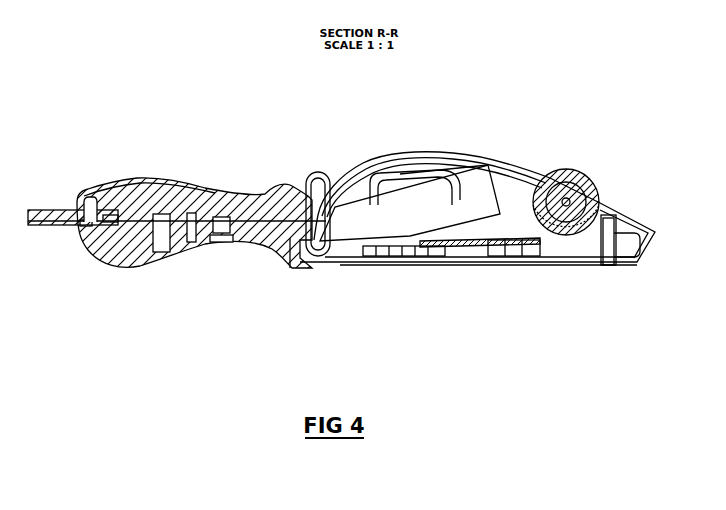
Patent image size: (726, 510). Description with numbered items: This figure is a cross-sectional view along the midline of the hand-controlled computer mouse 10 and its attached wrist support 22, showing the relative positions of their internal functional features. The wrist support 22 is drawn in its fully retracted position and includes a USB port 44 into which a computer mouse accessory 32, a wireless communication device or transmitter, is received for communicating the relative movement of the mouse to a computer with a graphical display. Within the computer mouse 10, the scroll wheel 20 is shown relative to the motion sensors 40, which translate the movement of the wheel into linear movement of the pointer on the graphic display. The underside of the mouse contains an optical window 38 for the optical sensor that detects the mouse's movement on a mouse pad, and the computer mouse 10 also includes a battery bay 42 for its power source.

The computer mouse 10 is at (634, 192).
The scroll wheel 20 is at (597, 175).
The wrist support 22 is at (298, 278).
The computer mouse accessory 32 is at (72, 212).
The optical window 38 is at (480, 263).
The motion sensors 40 is at (603, 207).
The battery bay 42 is at (367, 228).
The USB port 44 is at (95, 205).